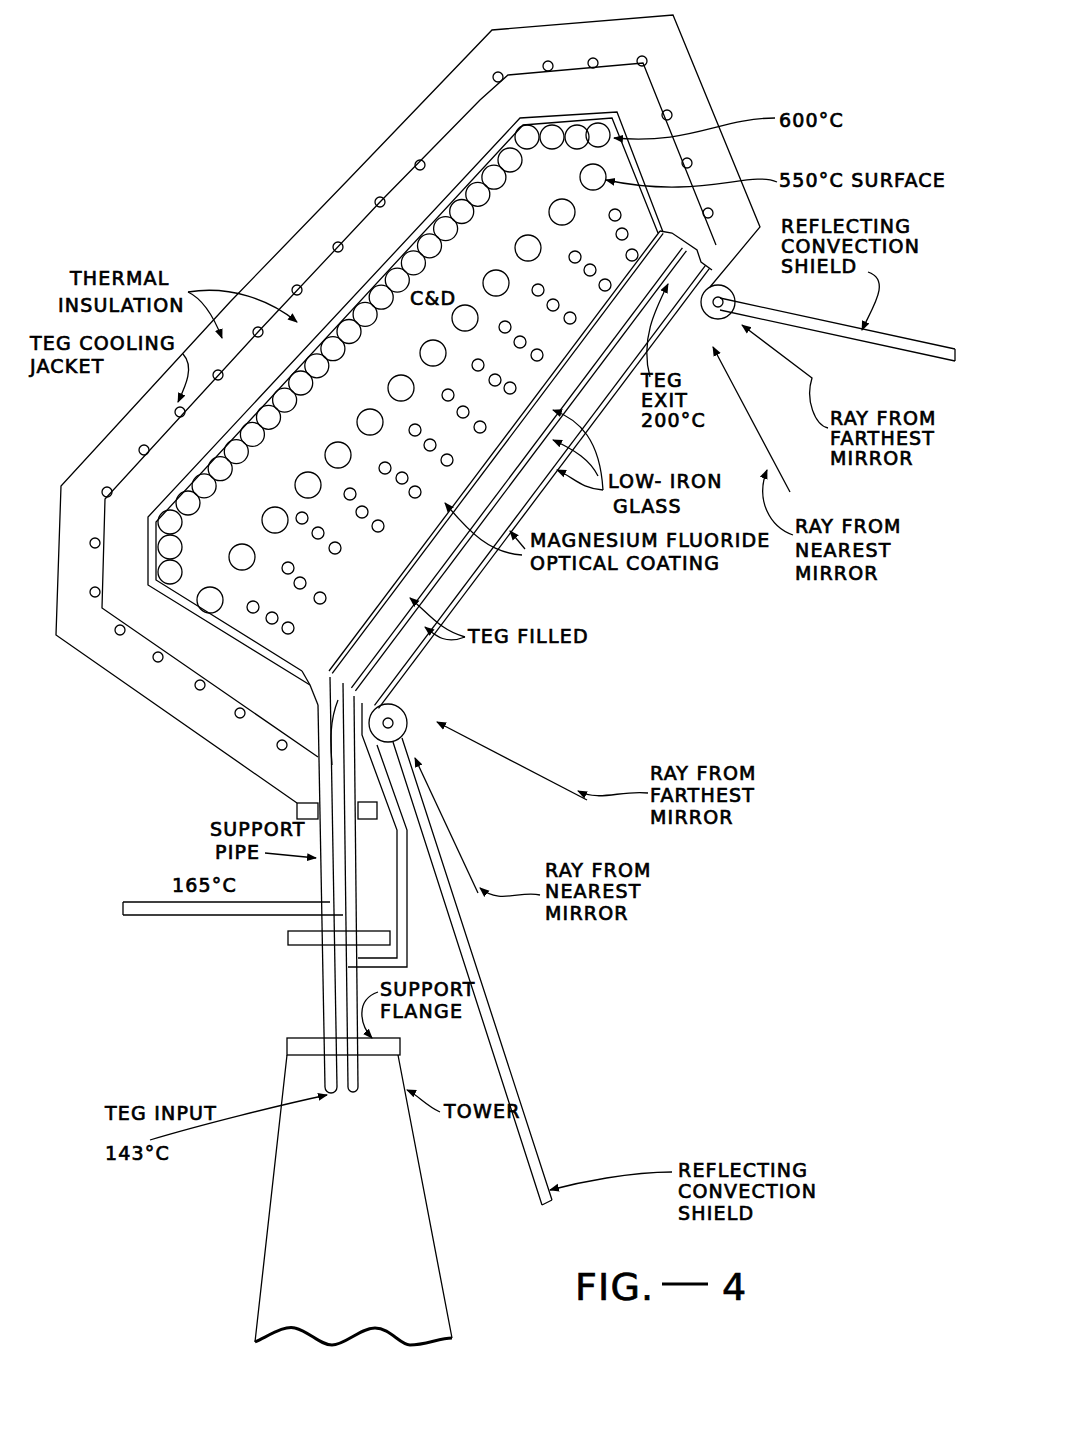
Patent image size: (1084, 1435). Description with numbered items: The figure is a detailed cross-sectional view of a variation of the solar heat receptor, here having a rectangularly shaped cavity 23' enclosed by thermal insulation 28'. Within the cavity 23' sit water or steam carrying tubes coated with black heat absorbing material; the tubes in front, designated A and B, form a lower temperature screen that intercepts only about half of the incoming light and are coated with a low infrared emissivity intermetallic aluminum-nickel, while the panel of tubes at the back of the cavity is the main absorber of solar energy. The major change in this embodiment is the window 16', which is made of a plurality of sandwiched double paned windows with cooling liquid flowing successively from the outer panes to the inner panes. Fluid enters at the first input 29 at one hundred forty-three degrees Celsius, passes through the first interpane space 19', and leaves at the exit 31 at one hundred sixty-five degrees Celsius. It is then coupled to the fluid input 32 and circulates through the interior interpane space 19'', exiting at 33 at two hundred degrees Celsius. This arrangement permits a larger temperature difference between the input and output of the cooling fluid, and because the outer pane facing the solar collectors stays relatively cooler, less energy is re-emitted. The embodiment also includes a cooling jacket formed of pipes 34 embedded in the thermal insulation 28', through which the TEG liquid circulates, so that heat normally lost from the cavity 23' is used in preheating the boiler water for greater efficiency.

The window 16' is at (544, 469).
The first interpane space 19' is at (518, 469).
The interior interpane space 19'' is at (496, 452).
The cavity 23' is at (401, 388).
The thermal insulation 28' is at (352, 398).
The first input 29 is at (345, 1088).
The exit 31 is at (660, 285).
The fluid input 32 is at (121, 909).
The exit 33 is at (442, 421).
The pipes 34 is at (144, 445).
The tube A is at (356, 493).
The tube B is at (396, 388).